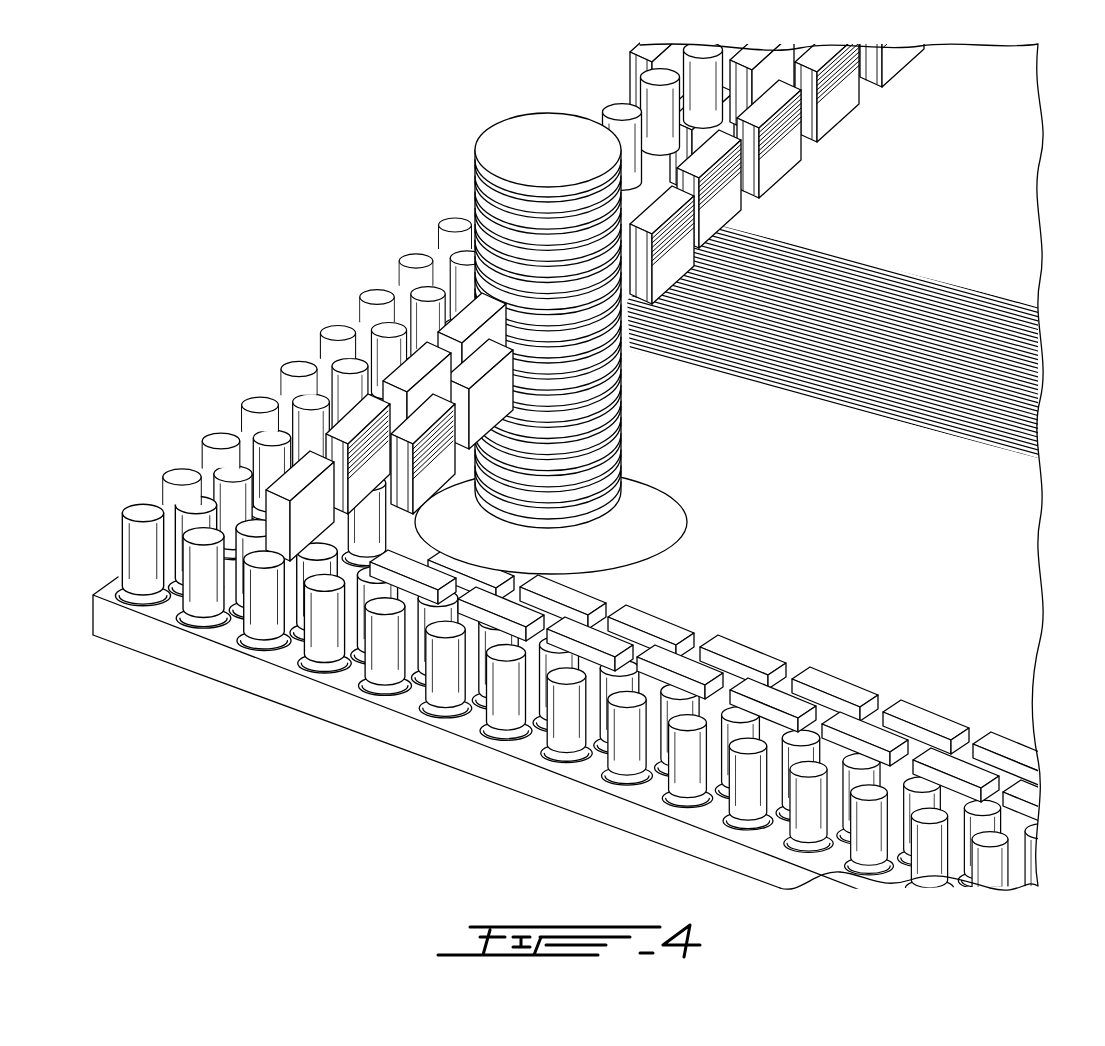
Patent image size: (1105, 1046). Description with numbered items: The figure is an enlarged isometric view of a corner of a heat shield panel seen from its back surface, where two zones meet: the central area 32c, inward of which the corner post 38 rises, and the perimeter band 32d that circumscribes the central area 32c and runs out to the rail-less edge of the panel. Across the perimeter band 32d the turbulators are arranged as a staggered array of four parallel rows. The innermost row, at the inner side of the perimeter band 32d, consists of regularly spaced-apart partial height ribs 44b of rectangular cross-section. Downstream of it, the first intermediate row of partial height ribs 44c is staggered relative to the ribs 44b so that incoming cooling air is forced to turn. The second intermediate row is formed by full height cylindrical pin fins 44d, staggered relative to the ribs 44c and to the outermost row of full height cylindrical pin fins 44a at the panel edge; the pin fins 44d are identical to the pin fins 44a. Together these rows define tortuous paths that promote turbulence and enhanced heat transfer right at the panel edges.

The central area 32c is at (848, 226).
The perimeter band 32d is at (755, 640).
The post 38 is at (583, 431).
The pin fins 44a is at (258, 405).
The ribs 44b is at (780, 137).
The ribs 44c is at (417, 372).
The pin fins 44d is at (427, 292).